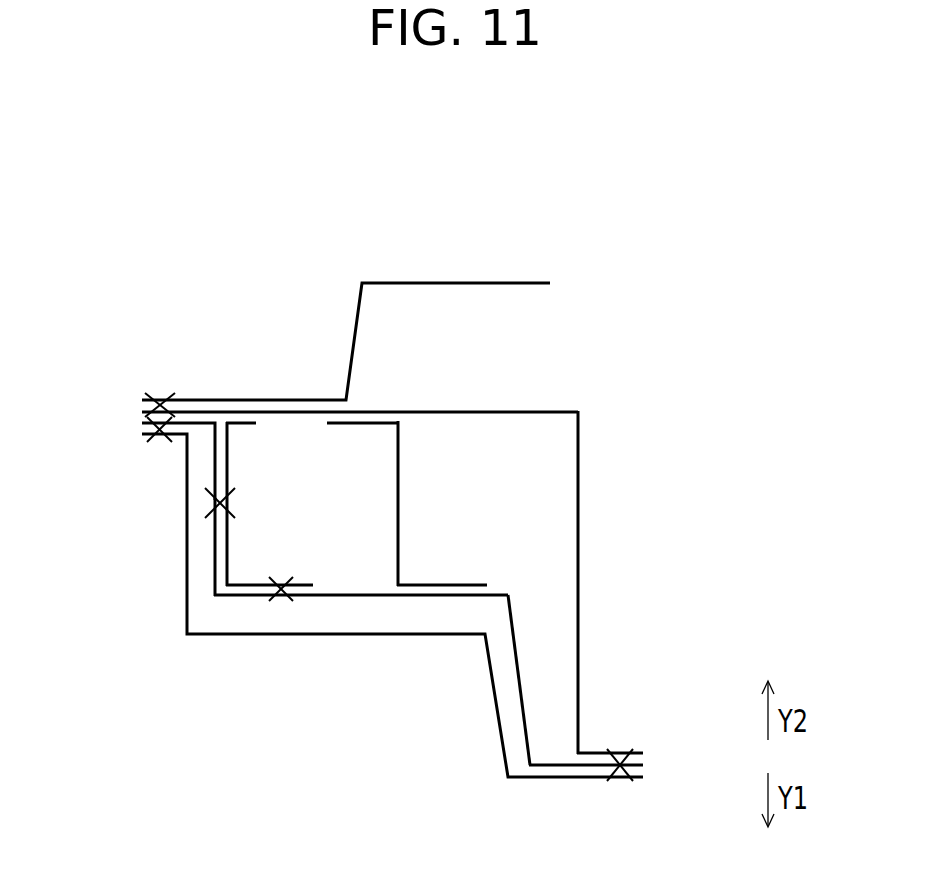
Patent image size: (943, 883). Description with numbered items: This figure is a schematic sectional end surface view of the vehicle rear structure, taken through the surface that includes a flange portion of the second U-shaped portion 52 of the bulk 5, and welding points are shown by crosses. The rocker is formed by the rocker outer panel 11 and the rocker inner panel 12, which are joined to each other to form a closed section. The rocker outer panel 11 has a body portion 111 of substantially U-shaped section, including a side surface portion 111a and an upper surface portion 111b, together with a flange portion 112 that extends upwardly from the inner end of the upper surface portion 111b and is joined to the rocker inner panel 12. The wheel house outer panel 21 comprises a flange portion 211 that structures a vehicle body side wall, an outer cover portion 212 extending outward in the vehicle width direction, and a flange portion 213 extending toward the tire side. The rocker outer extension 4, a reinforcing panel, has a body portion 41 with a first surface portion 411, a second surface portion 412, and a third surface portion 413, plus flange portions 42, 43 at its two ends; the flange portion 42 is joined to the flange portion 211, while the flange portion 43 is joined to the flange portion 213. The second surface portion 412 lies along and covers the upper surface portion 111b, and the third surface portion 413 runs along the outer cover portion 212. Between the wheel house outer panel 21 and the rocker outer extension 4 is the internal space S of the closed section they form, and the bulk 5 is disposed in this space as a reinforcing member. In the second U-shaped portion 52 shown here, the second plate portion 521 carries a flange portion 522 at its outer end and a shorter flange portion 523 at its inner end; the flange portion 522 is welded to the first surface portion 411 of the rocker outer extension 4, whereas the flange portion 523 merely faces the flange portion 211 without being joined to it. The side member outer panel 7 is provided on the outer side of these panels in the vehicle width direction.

The rocker inner panel 12 is at (523, 282).
The rocker outer panel 11 is at (448, 460).
The flange portion 112 is at (376, 415).
The body portion 111 is at (483, 503).
The side surface portion 111a is at (446, 548).
The upper surface portion 111b is at (400, 484).
The wheel house outer panel 21 is at (410, 544).
The flange portion 211 is at (500, 412).
The outer cover portion 212 is at (580, 548).
The flange portion 213 is at (592, 752).
The rocker outer extension 4 is at (363, 587).
The body portion 41 is at (363, 587).
The flange portion 42 is at (203, 420).
The first surface portion 411 is at (328, 598).
The second surface portion 412 is at (213, 552).
The third surface portion 413 is at (525, 738).
The flange portion 43 is at (573, 770).
The side member outer panel 7 is at (233, 635).
The bulk 5 is at (193, 468).
The second U-shaped portion 52 is at (193, 468).
The second plate portion 521 is at (230, 452).
The flange portion 522 is at (248, 583).
The flange portion 523 is at (241, 420).
The internal space S is at (291, 436).